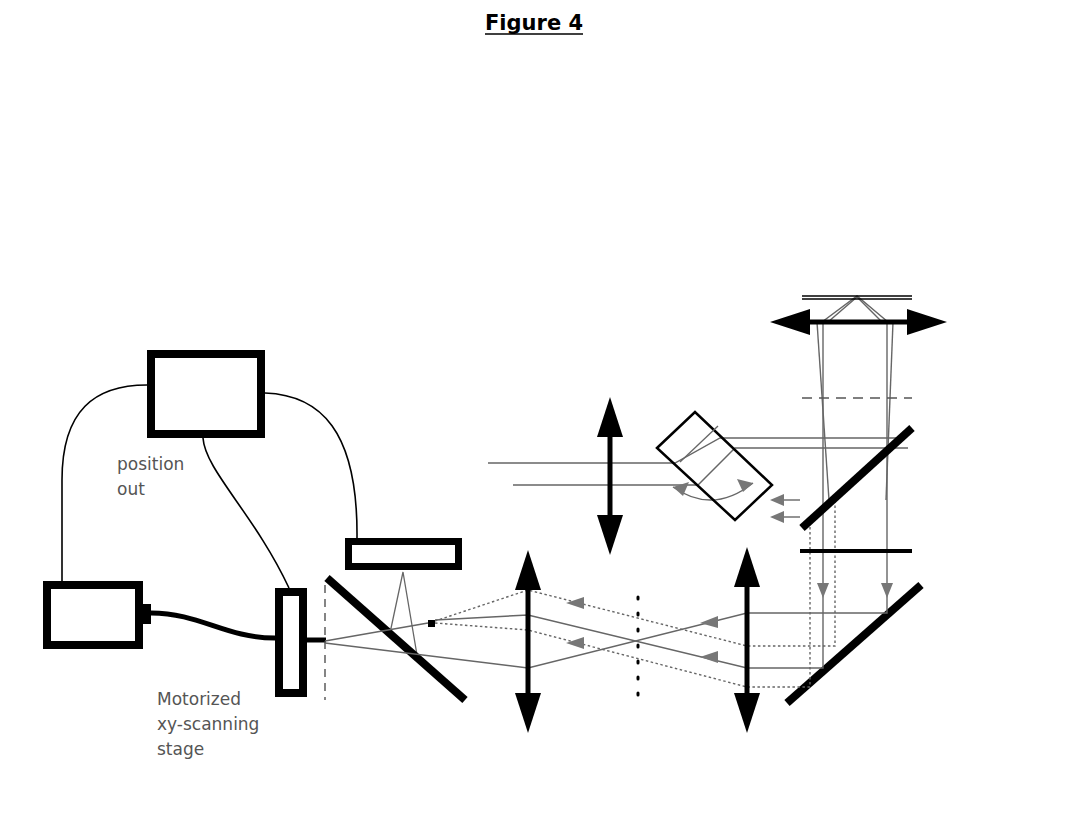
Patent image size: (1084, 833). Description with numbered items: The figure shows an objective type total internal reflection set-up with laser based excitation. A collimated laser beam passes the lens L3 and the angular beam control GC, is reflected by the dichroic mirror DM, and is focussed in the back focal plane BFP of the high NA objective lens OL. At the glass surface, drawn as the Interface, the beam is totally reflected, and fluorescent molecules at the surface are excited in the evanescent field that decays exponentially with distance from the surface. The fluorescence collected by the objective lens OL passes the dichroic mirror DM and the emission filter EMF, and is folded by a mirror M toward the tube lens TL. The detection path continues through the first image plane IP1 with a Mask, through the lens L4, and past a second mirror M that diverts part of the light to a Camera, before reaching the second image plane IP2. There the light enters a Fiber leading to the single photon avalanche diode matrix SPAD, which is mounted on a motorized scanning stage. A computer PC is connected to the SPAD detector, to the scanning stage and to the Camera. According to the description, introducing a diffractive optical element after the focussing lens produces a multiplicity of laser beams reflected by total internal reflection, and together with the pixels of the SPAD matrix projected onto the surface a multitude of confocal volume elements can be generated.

The element PC is at (206, 394).
The single photon avalanche diode matrix SPAD is at (99, 615).
The fiber Fiber is at (213, 610).
The image plane IP2 is at (330, 658).
The camera Camera is at (404, 583).
The mirror M is at (624, 654).
The lens L4 is at (528, 655).
The mask Mask is at (660, 632).
The image plane IP1 is at (635, 721).
The tube lens TL is at (747, 654).
The lens L3 is at (610, 463).
The angular beam control GC is at (714, 465).
The emission filter EMF is at (879, 551).
The dichroic mirror DM is at (876, 478).
The back focal plane BFP is at (878, 404).
The objective lens OL is at (842, 322).
The interface Interface is at (824, 288).